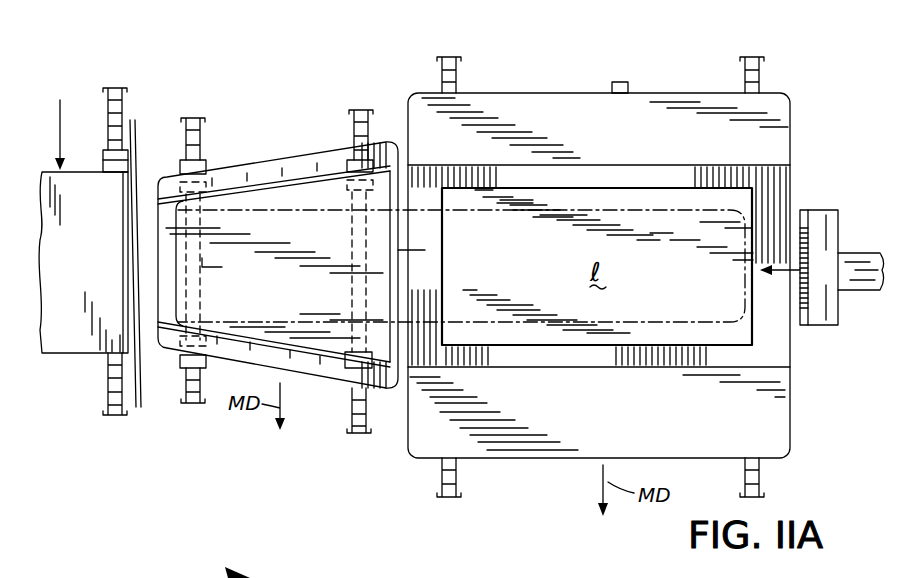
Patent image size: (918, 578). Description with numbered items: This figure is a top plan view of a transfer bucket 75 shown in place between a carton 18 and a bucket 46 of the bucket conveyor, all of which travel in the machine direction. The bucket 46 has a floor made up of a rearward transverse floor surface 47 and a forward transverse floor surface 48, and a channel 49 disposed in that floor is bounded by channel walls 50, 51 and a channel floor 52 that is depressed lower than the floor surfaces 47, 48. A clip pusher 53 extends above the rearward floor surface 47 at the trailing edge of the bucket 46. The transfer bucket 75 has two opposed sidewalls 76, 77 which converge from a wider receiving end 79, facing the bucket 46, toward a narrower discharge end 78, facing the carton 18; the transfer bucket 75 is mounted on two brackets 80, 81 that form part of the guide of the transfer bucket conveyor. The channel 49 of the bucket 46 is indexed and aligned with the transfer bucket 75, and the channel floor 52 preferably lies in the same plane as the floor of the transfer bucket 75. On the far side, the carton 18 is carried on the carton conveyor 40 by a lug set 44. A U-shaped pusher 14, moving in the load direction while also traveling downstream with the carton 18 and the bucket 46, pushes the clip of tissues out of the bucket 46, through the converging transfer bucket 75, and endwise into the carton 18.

The U-shaped pusher 14 is at (808, 210).
The carton 18 is at (78, 291).
The carton conveyor 40 is at (108, 408).
The lug set 44 is at (103, 160).
The bucket 46 is at (677, 93).
The rearward transverse floor surface 47 is at (624, 152).
The forward transverse floor surface 48 is at (619, 444).
The channel 49 is at (552, 370).
The channel wall 50 is at (606, 172).
The channel wall 51 is at (626, 345).
The channel floor 52 is at (706, 367).
The clip pusher 53 is at (622, 82).
The transfer bucket 75 is at (286, 153).
The sidewall 76 is at (268, 189).
The sidewall 77 is at (243, 335).
The discharge end 78 is at (158, 247).
The receiving end 79 is at (425, 251).
The bracket 80 is at (356, 240).
The bracket 81 is at (228, 268).